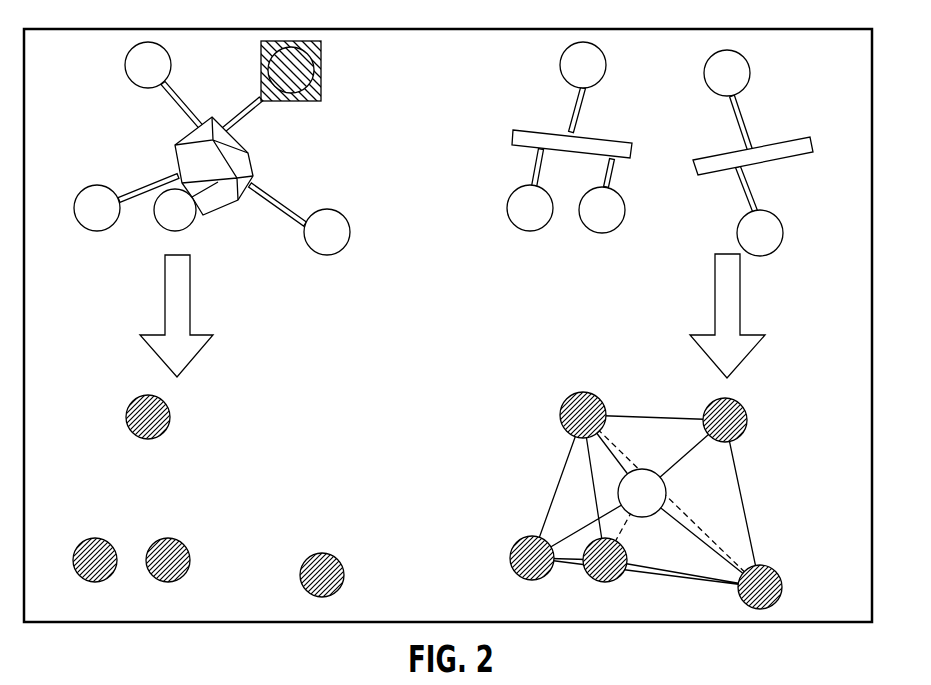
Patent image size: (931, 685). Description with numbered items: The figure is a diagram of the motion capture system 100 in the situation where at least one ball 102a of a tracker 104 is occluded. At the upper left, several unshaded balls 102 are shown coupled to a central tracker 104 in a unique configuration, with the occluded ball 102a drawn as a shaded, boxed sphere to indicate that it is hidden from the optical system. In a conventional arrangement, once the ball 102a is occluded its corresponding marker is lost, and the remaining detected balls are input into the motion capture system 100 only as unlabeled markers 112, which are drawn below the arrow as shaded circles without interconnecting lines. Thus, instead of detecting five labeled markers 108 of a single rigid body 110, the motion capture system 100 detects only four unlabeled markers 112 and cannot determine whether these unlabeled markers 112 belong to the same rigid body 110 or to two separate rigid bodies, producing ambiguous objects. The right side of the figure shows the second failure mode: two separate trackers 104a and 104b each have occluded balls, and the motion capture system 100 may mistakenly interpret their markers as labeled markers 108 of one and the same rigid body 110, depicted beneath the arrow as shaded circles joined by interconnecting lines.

The motion capture system 100 is at (473, 58).
The balls 102 is at (150, 60).
The occluded ball 102a is at (317, 67).
The tracker 104 is at (250, 158).
The first separate tracker 104a is at (504, 127).
The second separate tracker 104b is at (710, 203).
The labeled markers 108 is at (659, 501).
The rigid body 110 is at (522, 456).
The unlabeled markers 112 is at (173, 410).